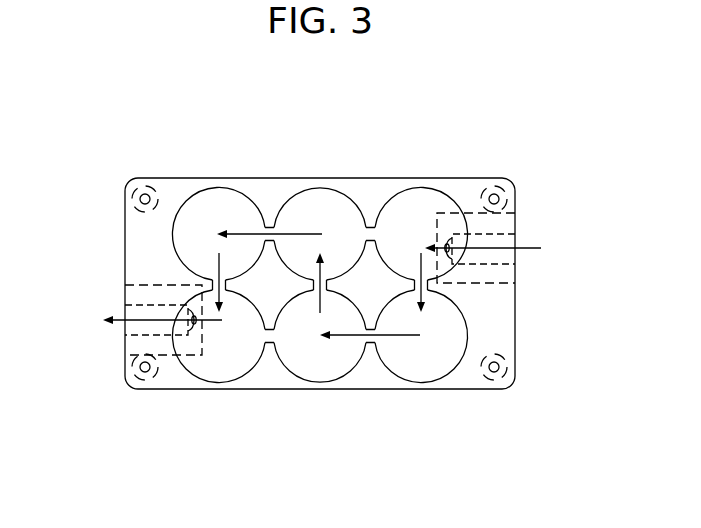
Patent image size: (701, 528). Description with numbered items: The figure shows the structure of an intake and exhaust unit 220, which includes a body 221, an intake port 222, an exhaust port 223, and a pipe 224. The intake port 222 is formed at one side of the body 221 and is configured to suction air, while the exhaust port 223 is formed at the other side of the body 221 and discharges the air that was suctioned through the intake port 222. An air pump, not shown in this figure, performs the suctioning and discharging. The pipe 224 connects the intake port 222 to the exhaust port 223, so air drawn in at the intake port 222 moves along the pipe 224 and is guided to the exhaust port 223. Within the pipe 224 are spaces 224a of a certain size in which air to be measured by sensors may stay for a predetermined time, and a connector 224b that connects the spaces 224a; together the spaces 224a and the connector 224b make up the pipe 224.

The intake and exhaust unit 220 is at (191, 165).
The body 221 is at (274, 188).
The intake port 222 is at (516, 257).
The exhaust port 223 is at (126, 309).
The pipe 224 is at (358, 377).
The space 224a is at (312, 358).
The connector 224b is at (328, 283).